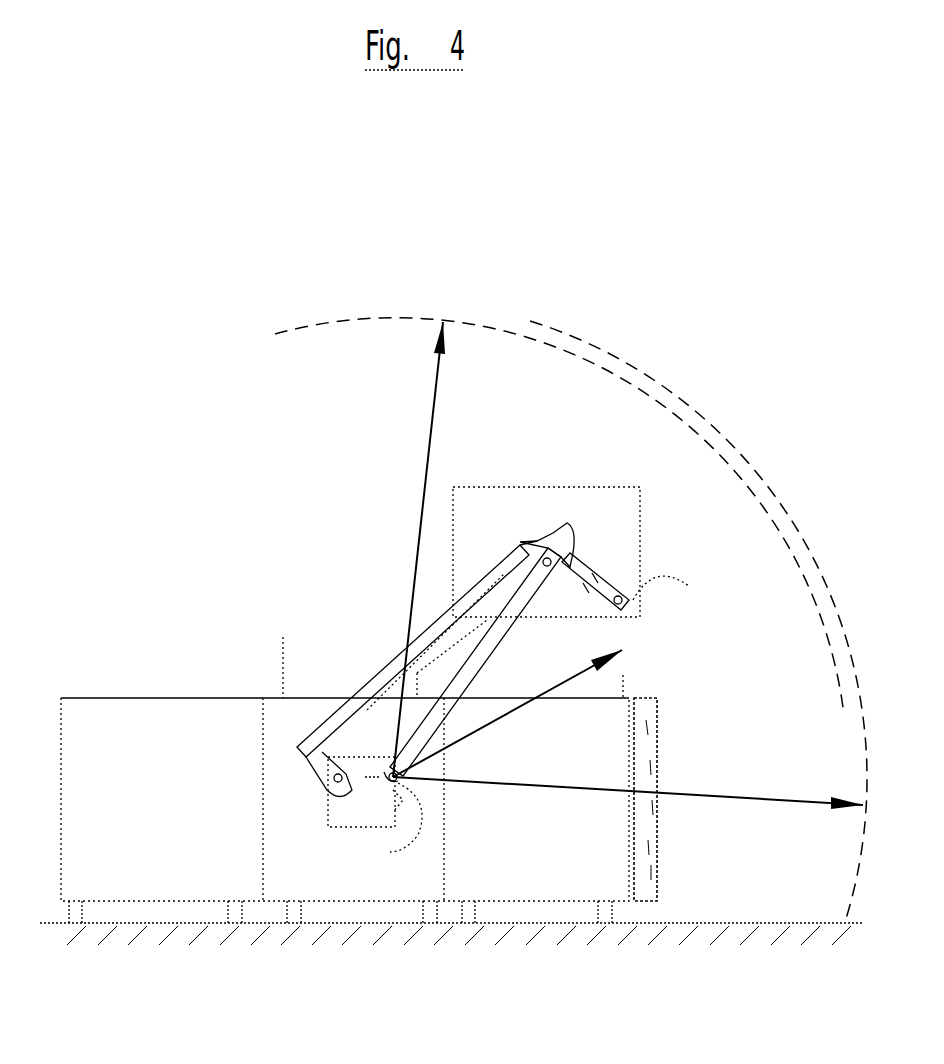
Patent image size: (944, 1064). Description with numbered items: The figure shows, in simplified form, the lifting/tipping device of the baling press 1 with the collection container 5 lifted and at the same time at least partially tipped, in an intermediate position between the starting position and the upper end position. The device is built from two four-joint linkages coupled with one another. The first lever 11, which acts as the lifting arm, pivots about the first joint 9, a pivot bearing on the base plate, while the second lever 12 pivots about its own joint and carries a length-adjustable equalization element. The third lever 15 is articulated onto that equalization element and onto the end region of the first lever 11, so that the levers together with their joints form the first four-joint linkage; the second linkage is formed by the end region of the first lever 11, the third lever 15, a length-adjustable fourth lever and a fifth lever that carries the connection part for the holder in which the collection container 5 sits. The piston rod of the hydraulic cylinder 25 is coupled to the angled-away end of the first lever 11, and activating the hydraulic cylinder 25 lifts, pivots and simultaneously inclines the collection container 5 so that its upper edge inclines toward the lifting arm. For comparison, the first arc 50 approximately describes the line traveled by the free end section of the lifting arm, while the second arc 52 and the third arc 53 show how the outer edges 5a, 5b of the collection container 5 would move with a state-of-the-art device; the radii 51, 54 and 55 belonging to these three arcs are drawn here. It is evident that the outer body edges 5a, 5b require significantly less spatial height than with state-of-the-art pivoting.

The baling press 1 is at (168, 655).
The collection container 5 is at (527, 500).
The outer edge of the collection container 5a is at (665, 463).
The outer edge of the collection container 5b is at (450, 452).
The first joint 9 is at (390, 852).
The first lever 11 is at (475, 678).
The second lever 12 is at (377, 680).
The third lever 15 is at (600, 588).
The hydraulic cylinder 25 is at (392, 824).
The first arc 50 is at (633, 677).
The radius 51 is at (480, 726).
The second arc 52 is at (307, 326).
The third arc 53 is at (650, 375).
The radius 54 is at (427, 473).
The radius 55 is at (748, 800).